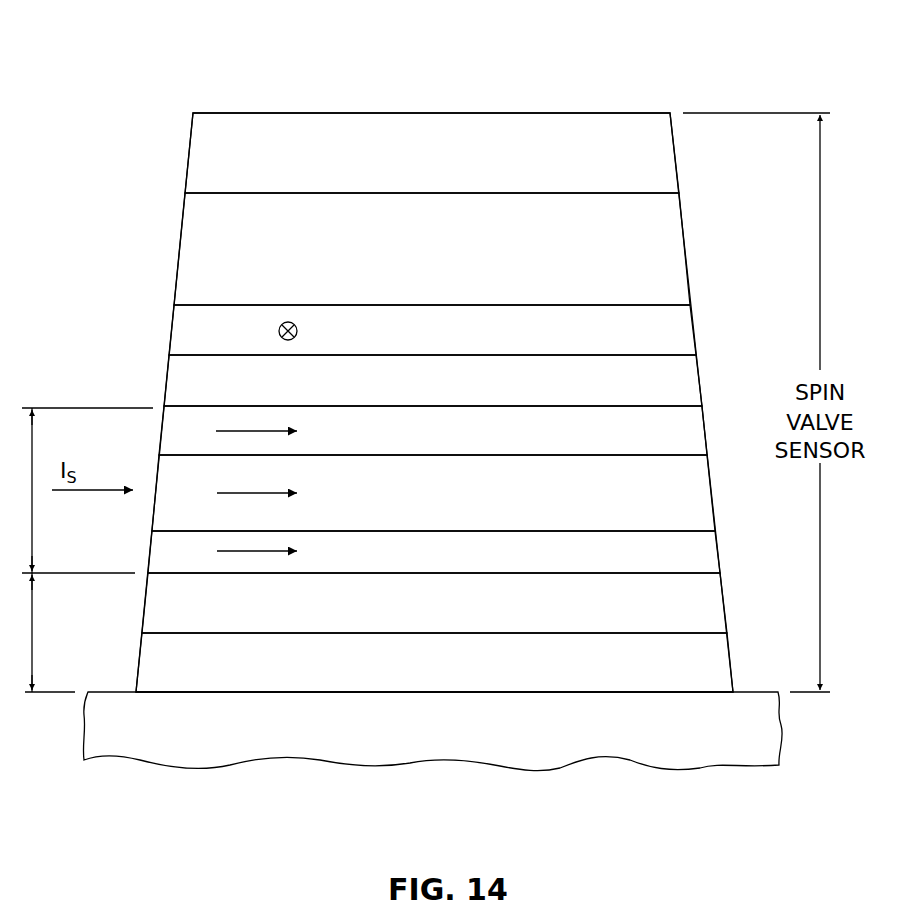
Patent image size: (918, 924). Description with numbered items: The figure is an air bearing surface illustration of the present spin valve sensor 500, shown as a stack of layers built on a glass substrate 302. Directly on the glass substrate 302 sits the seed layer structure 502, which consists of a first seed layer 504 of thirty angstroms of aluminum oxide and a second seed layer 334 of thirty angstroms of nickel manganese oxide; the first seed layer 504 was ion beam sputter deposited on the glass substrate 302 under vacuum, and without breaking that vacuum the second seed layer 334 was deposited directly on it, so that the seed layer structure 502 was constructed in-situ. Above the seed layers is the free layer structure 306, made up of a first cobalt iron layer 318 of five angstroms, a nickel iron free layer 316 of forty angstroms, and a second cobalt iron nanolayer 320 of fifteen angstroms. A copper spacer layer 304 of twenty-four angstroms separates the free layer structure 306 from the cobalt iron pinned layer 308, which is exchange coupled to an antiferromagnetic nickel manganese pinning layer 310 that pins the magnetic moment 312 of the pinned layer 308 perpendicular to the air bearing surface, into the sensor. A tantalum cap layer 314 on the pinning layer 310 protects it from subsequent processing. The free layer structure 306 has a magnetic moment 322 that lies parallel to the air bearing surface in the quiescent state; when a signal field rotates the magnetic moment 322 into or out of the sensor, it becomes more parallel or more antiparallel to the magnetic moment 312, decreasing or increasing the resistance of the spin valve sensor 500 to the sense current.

The spin valve sensor 500 is at (590, 65).
The cap layer 314 is at (643, 171).
The antiferromagnetic pinning layer 310 is at (653, 266).
The pinned layer 308 is at (660, 344).
The magnetic moment of the pinned layer 312 is at (278, 331).
The spacer layer 304 is at (665, 395).
The nanolayer 320 is at (668, 445).
The free layer 316 is at (673, 504).
The first cobalt iron layer 318 is at (678, 562).
The second seed layer 334 is at (680, 616).
The first seed layer 504 is at (686, 672).
The glass substrate 302 is at (698, 739).
The magnetic moment of the free layer structure 322 is at (232, 493).
The free layer structure 306 is at (30, 408).
The seed layer structure 502 is at (32, 692).